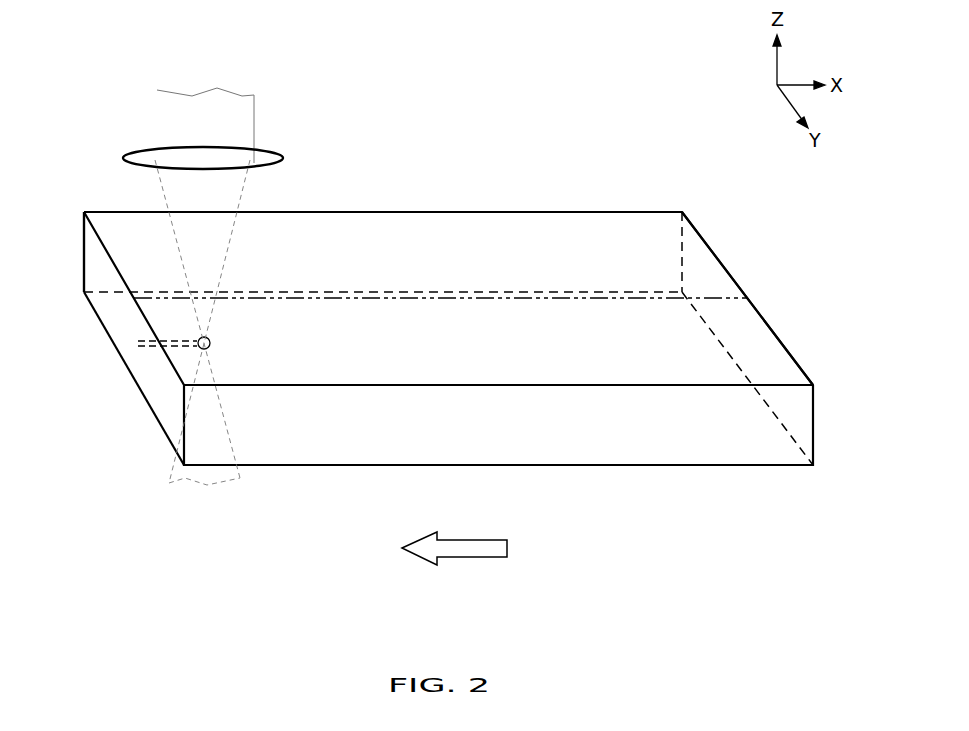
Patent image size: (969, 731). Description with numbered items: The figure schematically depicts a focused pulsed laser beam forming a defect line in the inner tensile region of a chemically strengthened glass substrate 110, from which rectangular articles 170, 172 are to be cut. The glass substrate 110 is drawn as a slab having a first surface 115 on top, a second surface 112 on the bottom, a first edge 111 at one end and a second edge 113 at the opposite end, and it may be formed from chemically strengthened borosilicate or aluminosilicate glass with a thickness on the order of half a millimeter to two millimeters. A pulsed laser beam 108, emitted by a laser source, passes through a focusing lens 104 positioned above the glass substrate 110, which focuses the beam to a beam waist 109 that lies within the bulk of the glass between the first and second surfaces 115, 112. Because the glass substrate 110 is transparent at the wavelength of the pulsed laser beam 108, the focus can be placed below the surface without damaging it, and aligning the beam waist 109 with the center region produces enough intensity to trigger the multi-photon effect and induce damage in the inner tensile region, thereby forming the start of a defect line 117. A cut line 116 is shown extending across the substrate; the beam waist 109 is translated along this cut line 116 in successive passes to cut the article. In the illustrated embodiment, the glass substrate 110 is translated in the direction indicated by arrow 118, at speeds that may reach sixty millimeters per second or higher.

The focusing lens 104 is at (283, 158).
The pulsed laser beam 108 is at (254, 118).
The beam waist 109 is at (210, 344).
The chemically strengthened glass substrate 110 is at (448, 313).
The first edge 111 is at (122, 277).
The second surface 112 is at (660, 466).
The second edge 113 is at (782, 338).
The first surface 115 is at (579, 255).
The cut line 116 is at (572, 299).
The defect line 117 is at (148, 347).
The arrow 118 is at (480, 558).
The rectangular article 170 is at (442, 228).
The rectangular article 172 is at (453, 380).